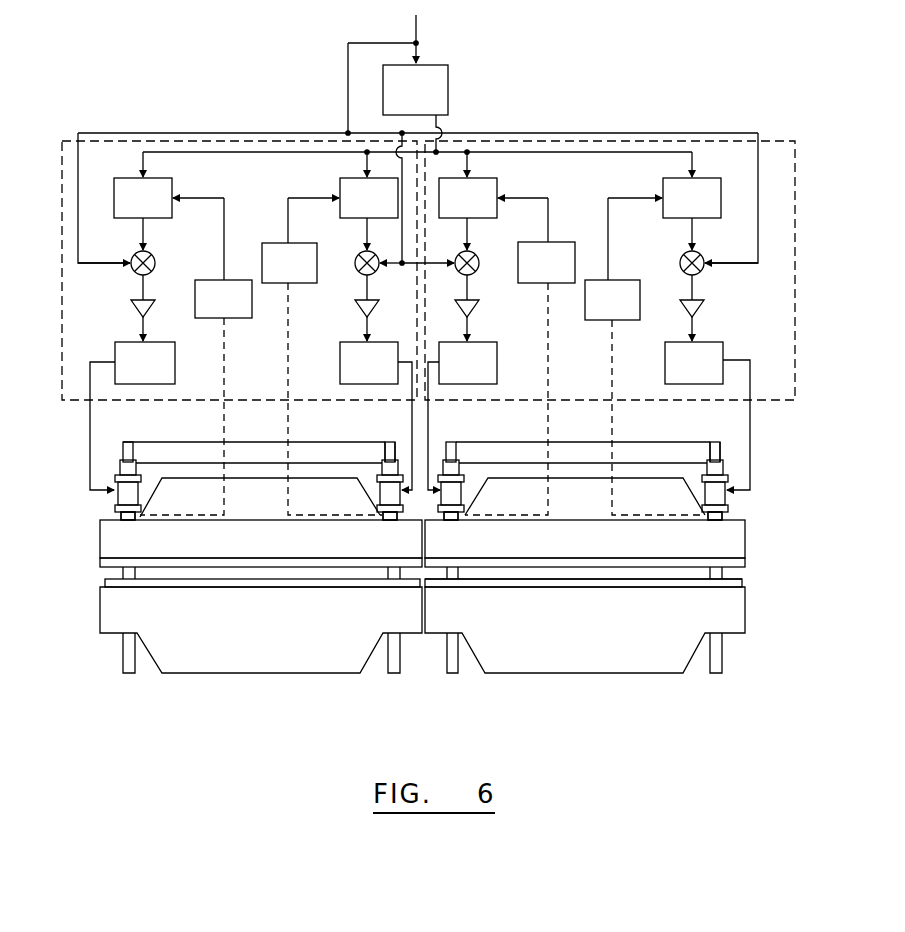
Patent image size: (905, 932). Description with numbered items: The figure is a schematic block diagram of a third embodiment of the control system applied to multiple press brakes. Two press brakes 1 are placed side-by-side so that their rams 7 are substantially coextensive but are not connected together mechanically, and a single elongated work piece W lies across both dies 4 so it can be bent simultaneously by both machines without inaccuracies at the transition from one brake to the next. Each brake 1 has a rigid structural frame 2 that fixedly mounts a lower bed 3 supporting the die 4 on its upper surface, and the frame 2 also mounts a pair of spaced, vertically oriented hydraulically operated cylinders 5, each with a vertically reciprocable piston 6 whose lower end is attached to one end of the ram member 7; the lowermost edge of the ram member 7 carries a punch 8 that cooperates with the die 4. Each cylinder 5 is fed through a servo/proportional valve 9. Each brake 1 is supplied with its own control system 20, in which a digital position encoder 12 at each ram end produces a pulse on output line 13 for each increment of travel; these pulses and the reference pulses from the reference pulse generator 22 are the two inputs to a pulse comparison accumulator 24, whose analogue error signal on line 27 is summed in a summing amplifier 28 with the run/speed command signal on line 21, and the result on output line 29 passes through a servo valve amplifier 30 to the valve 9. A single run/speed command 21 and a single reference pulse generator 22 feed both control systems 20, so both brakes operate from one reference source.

The brake 1 is at (505, 439).
The rigid structural frame 2 is at (717, 447).
The lower bed 3 is at (595, 644).
The die 4 is at (623, 614).
The hydraulically operated cylinder 5 is at (421, 481).
The vertically reciprocable piston 6 is at (724, 516).
The ram member 7 is at (587, 546).
The punch 8 is at (536, 565).
The servo/proportional valve 9 is at (665, 363).
The digital position encoder 12 is at (579, 347).
The output line 13 is at (613, 196).
The control system 20 is at (62, 139).
The run/speed command line 21 is at (415, 34).
The reference pulse generator 22 is at (448, 88).
The pulse comparison accumulator 24 is at (663, 183).
The error signal line 27 is at (690, 226).
The summing amplifier 28 is at (680, 264).
The output line 29 is at (692, 283).
The servo valve amplifier 30 is at (715, 306).
The work piece W is at (540, 584).